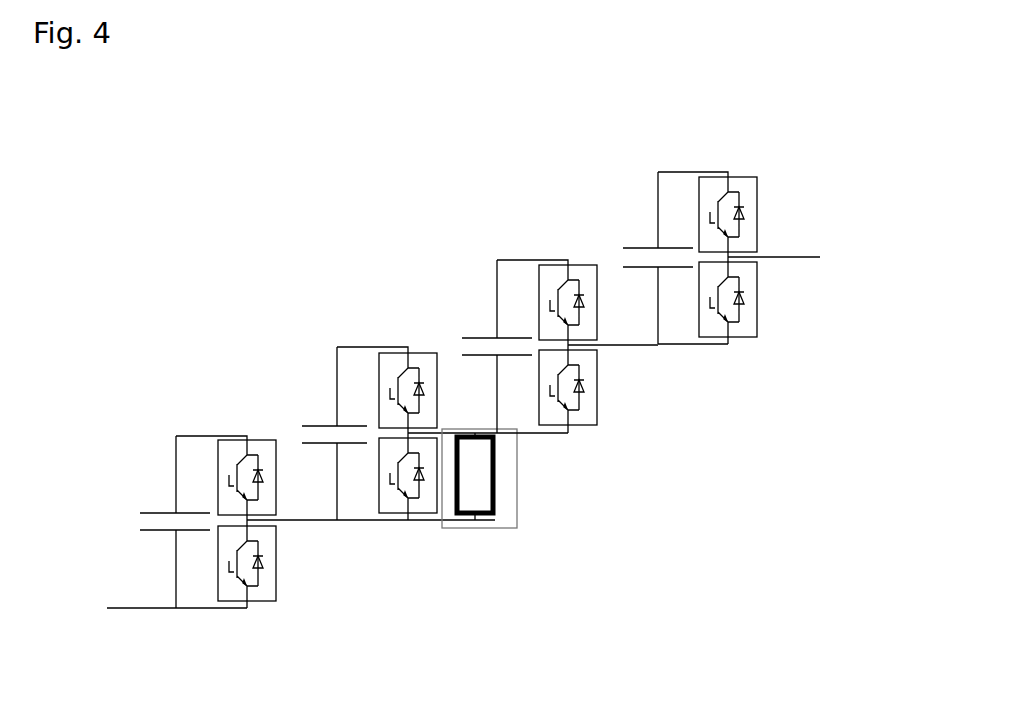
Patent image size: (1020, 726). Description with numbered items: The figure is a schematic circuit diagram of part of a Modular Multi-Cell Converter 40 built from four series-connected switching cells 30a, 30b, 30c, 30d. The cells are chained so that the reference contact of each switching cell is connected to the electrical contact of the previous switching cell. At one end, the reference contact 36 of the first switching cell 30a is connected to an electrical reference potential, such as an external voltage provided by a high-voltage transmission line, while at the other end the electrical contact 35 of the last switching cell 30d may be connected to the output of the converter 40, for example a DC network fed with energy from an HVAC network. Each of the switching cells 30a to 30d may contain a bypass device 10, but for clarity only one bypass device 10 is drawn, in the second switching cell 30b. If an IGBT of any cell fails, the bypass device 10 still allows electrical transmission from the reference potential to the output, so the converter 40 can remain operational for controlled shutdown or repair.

The Modular Multi-Cell Converter 40 is at (285, 209).
The first switching cell 30a is at (296, 620).
The second switching cell 30b is at (456, 551).
The third switching cell 30c is at (628, 448).
The last switching cell 30d is at (791, 366).
The bypass device 10 is at (492, 477).
The electrical contact 35 is at (796, 252).
The reference contact 36 is at (127, 609).